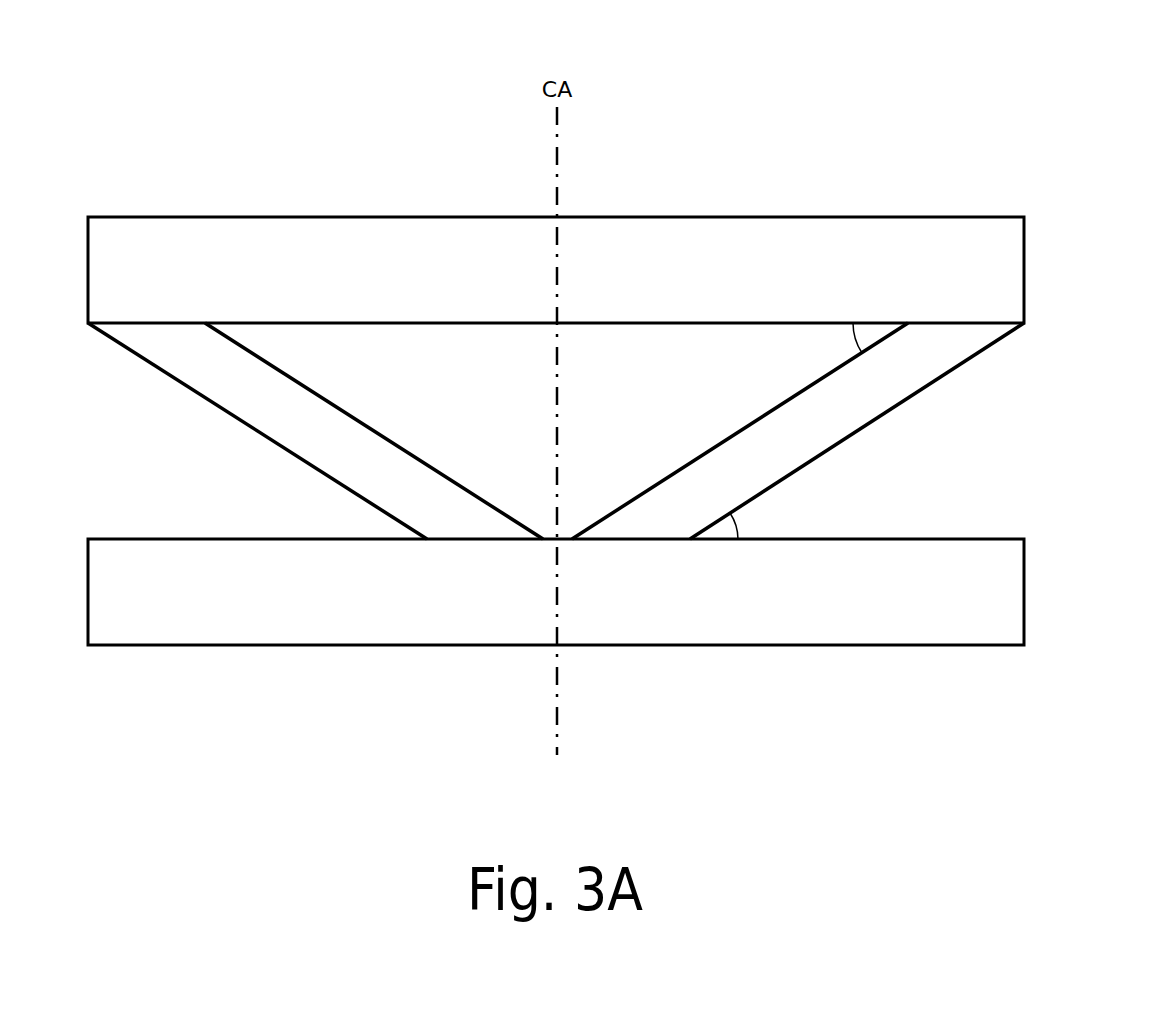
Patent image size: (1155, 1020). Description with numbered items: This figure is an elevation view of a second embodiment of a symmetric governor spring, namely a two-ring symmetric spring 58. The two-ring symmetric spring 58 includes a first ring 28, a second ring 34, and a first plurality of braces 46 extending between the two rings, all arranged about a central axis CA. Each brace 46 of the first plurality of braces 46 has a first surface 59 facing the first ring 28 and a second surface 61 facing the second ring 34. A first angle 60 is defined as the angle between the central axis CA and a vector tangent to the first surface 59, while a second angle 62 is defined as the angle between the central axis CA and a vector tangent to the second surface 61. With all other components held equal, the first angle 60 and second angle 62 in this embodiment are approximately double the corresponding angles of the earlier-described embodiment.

The two-ring symmetric spring 58 is at (620, 377).
The first ring 28 is at (1018, 268).
The second ring 34 is at (1018, 573).
The first plurality of braces 46 is at (897, 405).
The first surface 59 is at (747, 423).
The first angle 60 is at (865, 333).
The second surface 61 is at (808, 462).
The second angle 62 is at (725, 530).